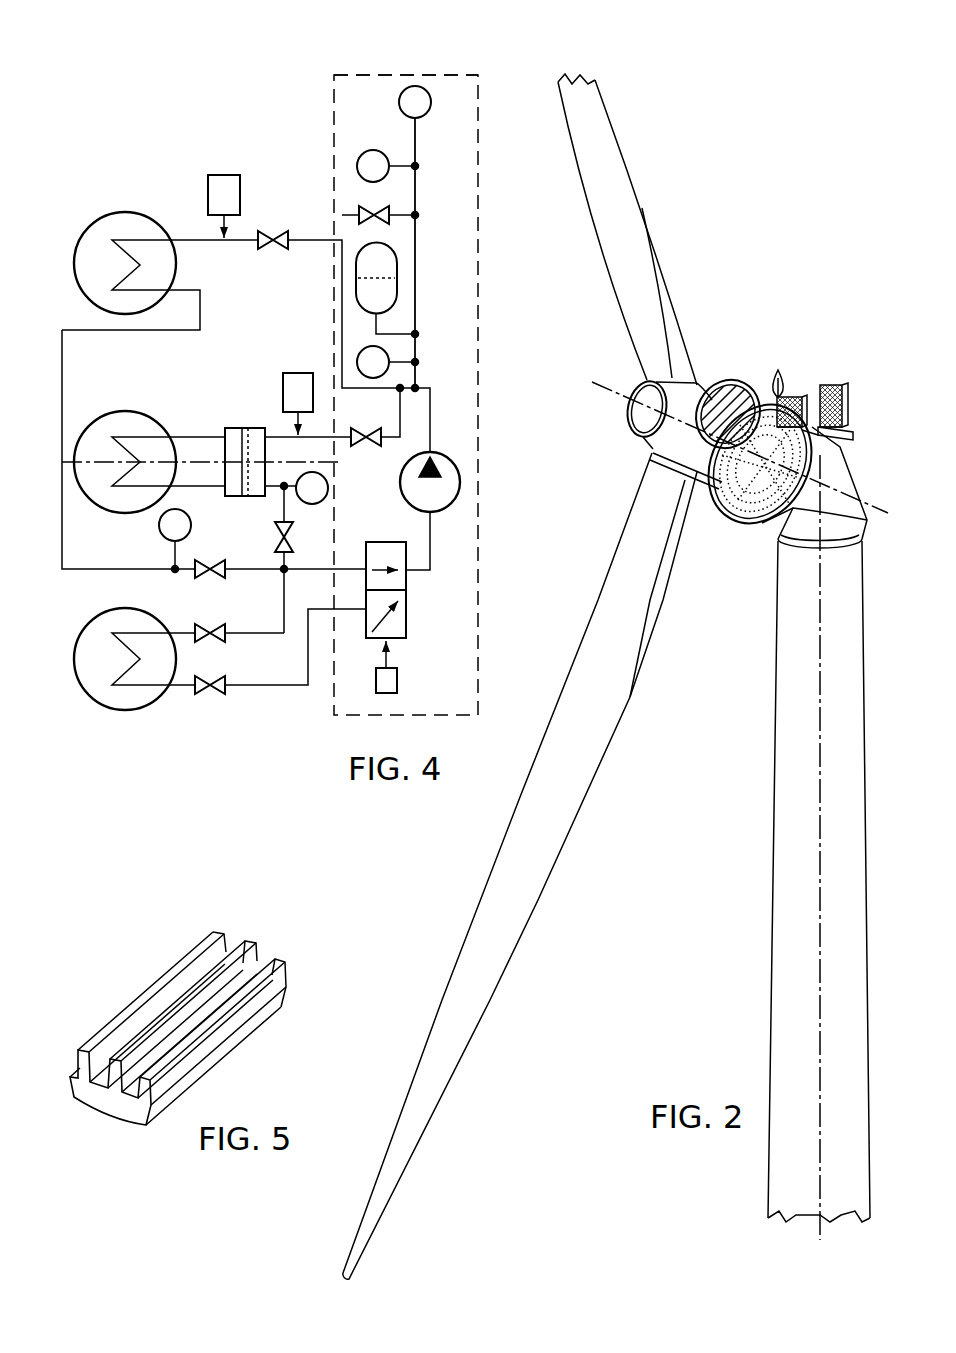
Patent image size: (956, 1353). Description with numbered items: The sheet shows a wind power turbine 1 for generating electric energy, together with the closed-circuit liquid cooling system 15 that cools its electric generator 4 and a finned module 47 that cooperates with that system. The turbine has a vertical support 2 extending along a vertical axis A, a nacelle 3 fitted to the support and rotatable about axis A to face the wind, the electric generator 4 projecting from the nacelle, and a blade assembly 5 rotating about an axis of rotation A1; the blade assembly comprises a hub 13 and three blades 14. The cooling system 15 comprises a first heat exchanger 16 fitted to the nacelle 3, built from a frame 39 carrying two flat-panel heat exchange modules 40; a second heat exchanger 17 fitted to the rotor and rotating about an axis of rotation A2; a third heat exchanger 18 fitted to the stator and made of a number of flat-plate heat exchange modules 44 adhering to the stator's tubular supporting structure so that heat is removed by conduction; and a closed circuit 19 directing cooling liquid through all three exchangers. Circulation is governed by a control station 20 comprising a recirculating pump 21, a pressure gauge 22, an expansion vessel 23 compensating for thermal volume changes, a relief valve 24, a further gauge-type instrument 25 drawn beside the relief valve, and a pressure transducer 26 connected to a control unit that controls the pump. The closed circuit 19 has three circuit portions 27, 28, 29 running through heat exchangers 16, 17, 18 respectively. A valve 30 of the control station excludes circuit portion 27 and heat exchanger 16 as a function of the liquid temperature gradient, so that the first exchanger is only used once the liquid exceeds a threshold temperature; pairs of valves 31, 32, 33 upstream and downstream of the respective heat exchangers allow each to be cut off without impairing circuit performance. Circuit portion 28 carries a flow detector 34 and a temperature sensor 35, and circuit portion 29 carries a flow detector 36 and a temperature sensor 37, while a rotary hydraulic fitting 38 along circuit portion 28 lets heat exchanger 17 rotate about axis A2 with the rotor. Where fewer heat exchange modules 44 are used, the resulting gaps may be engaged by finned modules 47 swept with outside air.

In FIG. 2, the wind power turbine 1 is at (777, 256).
In FIG. 2, the vertical support 2 is at (787, 985).
In FIG. 2, the nacelle 3 is at (863, 524).
In FIG. 2, the electric generator 4 is at (729, 519).
In FIG. 2, the blade assembly 5 is at (698, 354).
In FIG. 2, the hub 13 is at (681, 444).
In FIG. 2, the blades 14 is at (620, 236).
In FIG. 4, the cooling system 15 is at (190, 122).
In FIG. 2, the cooling system 15 is at (840, 356).
In FIG. 4, the first heat exchanger 16 is at (115, 720).
In FIG. 2, the first heat exchanger 16 is at (856, 407).
In FIG. 4, the second heat exchanger 17 is at (112, 402).
In FIG. 4, the third heat exchanger 18 is at (125, 204).
In FIG. 2, the third heat exchanger 18 is at (742, 526).
In FIG. 4, the closed circuit 19 is at (490, 325).
In FIG. 4, the control station 20 is at (413, 70).
In FIG. 4, the recirculating pump 21 is at (434, 490).
In FIG. 4, the pressure gauge 22 is at (362, 356).
In FIG. 4, the expansion vessel 23 is at (378, 266).
In FIG. 4, the relief valve 24 is at (384, 199).
In FIG. 4, the sensor 25 is at (374, 161).
In FIG. 4, the pressure transducer 26 is at (419, 107).
In FIG. 4, the circuit portion 27 is at (294, 700).
In FIG. 4, the circuit portion 28 is at (249, 423).
In FIG. 4, the circuit portion 29 is at (180, 202).
In FIG. 4, the valve 30 is at (419, 601).
In FIG. 4, the valves 31 is at (209, 646).
In FIG. 4, the valves 32 is at (366, 449).
In FIG. 4, the valves 33 is at (276, 223).
In FIG. 4, the flow detector 34 is at (293, 392).
In FIG. 4, the temperature sensor 35 is at (313, 502).
In FIG. 4, the flow detector 36 is at (224, 192).
In FIG. 4, the temperature sensor 37 is at (171, 530).
In FIG. 4, the rotary hydraulic fitting 38 is at (233, 440).
In FIG. 2, the frame 39 is at (826, 439).
In FIG. 2, the heat exchange modules 40 is at (790, 397).
In FIG. 2, the heat exchange modules 44 is at (760, 413).
In FIG. 5, the finned module 47 is at (265, 932).
In FIG. 2, the vertical axis A is at (820, 828).
In FIG. 2, the axis of rotation A1 is at (612, 400).
In FIG. 4, the axis of rotation A2 is at (62, 462).